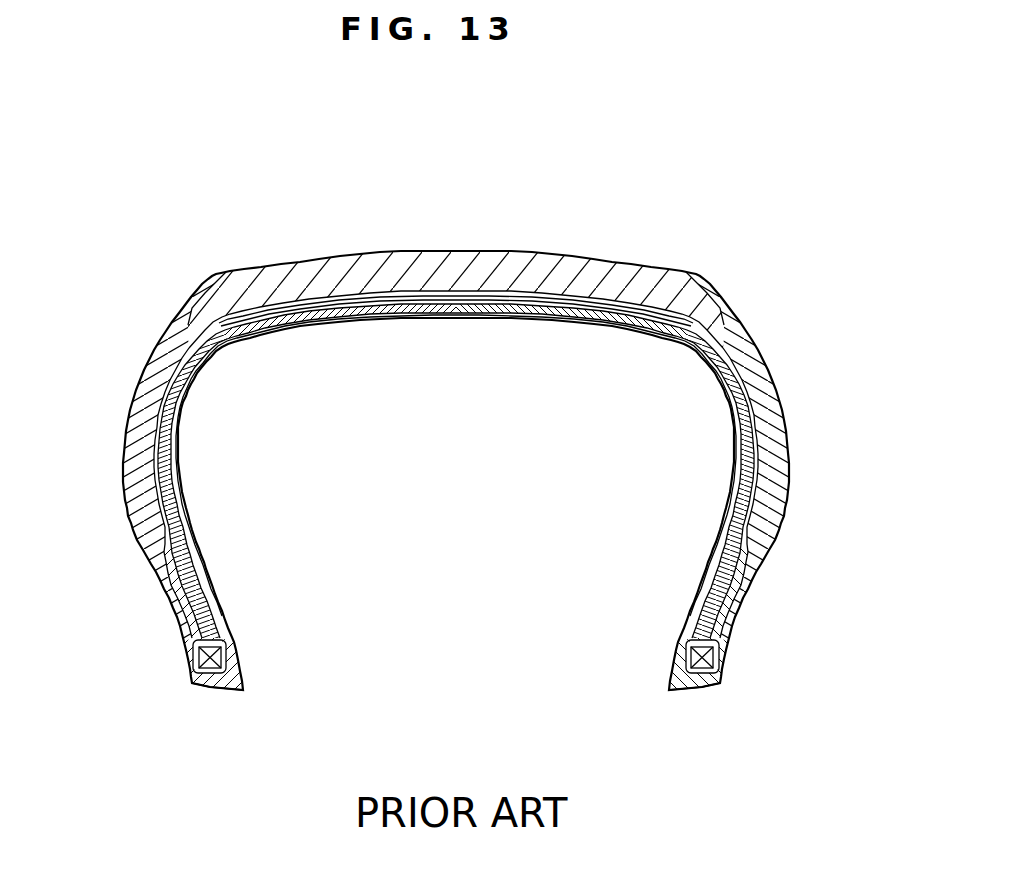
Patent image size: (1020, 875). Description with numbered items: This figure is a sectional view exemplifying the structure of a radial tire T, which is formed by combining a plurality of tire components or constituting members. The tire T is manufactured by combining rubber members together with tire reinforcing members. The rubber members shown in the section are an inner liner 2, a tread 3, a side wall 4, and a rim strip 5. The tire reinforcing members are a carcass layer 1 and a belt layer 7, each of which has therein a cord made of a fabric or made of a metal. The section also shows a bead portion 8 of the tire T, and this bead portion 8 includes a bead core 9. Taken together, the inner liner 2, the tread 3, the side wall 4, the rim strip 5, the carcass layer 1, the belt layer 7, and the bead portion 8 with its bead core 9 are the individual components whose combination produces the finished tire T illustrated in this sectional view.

The tire T is at (535, 233).
The carcass layer 1 is at (710, 573).
The inner liner 2 is at (455, 310).
The tread 3 is at (422, 263).
The side wall 4 is at (160, 348).
The rim strip 5 is at (210, 678).
The belt layer 7 is at (330, 300).
The bead portion 8 is at (182, 679).
The bead core 9 is at (230, 652).